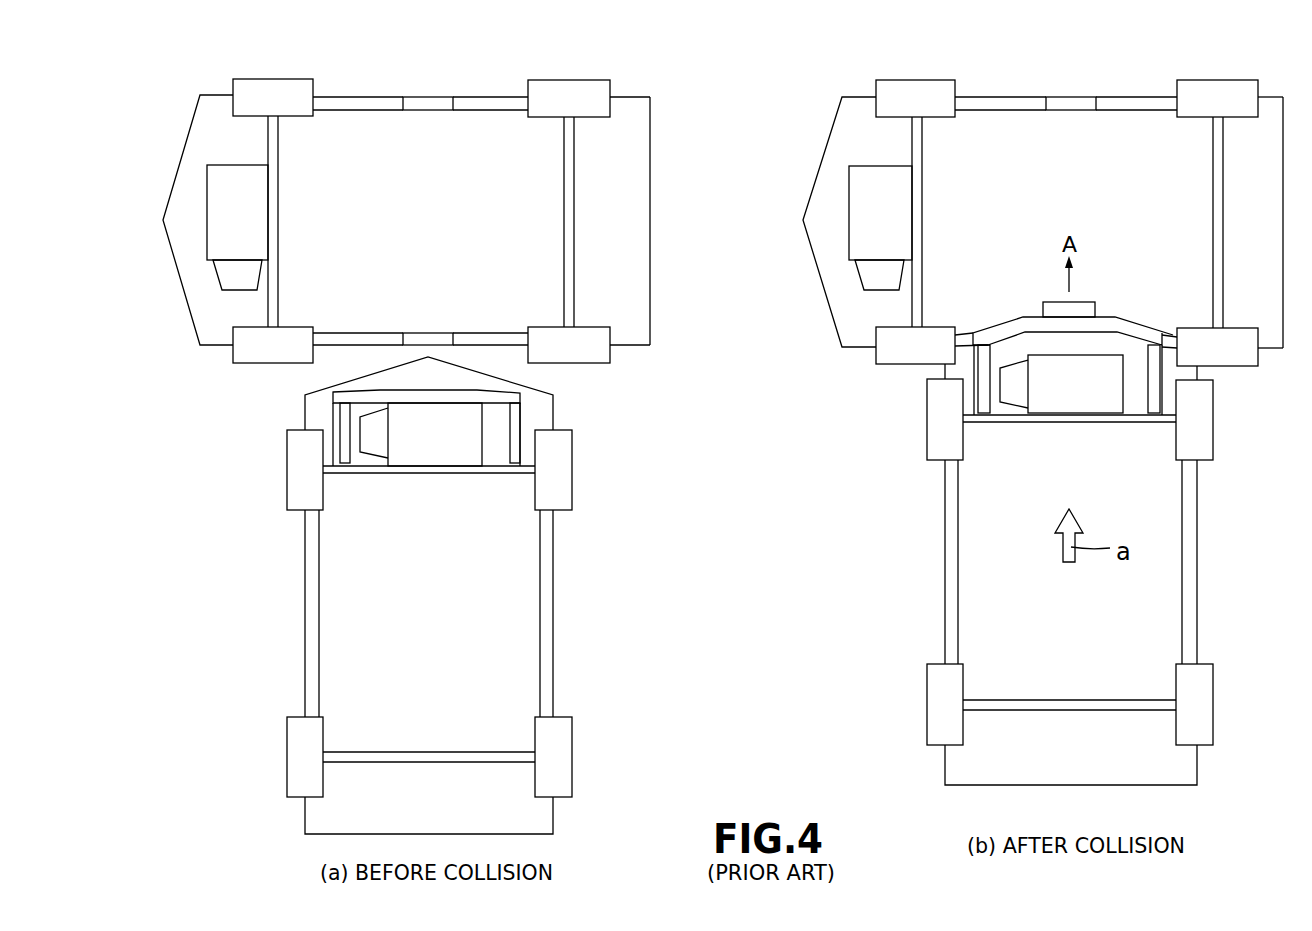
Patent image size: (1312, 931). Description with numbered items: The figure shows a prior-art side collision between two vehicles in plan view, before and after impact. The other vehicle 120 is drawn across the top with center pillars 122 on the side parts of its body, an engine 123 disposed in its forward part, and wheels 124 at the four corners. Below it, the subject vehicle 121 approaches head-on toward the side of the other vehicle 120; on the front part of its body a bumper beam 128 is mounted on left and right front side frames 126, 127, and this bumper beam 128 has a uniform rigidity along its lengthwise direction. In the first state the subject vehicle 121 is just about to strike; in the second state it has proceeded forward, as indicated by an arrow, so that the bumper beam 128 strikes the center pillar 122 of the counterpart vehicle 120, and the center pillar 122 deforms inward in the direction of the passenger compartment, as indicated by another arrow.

The other vehicle 120 is at (185, 148).
The subject vehicle 121 is at (305, 605).
The center pillar 122 is at (428, 106).
The engine 123 is at (218, 222).
The wheel 124 is at (290, 88).
The left front side frame 126 is at (345, 458).
The right front side frame 127 is at (512, 458).
The bumper beam 128 is at (337, 400).